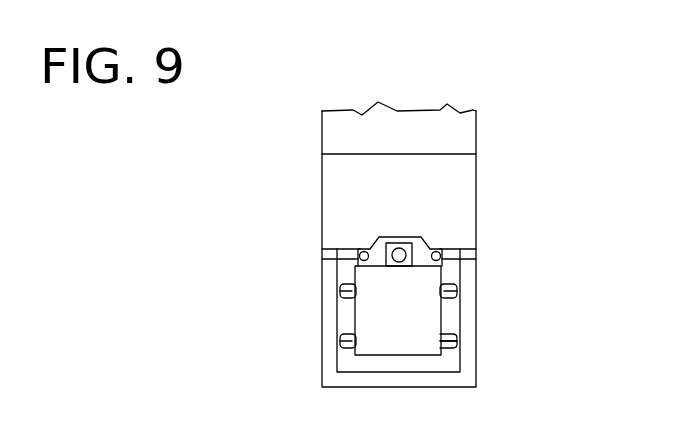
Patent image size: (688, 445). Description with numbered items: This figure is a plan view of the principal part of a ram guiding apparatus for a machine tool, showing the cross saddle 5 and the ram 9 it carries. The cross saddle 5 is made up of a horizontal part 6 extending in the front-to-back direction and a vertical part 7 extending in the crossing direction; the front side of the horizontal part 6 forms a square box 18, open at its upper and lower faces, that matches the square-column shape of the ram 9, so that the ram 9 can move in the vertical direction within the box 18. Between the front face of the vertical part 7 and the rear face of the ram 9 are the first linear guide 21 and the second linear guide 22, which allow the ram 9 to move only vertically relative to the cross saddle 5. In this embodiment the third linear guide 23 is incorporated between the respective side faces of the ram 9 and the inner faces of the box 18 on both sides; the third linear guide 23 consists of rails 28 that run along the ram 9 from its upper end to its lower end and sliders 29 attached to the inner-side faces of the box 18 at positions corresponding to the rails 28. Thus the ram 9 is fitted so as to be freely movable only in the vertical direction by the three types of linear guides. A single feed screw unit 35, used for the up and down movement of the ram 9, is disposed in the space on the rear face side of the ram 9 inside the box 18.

The cross saddle 5 is at (332, 153).
The horizontal part 6 is at (472, 123).
The vertical part 7 is at (463, 170).
The ram 9 is at (373, 349).
The box 18 is at (443, 378).
The first linear guide 21 is at (358, 257).
The second linear guide 22 is at (338, 292).
The third linear guide 23 is at (432, 342).
The rail 28 is at (455, 339).
The slider 29 is at (455, 344).
The feed screw unit 35 is at (415, 243).